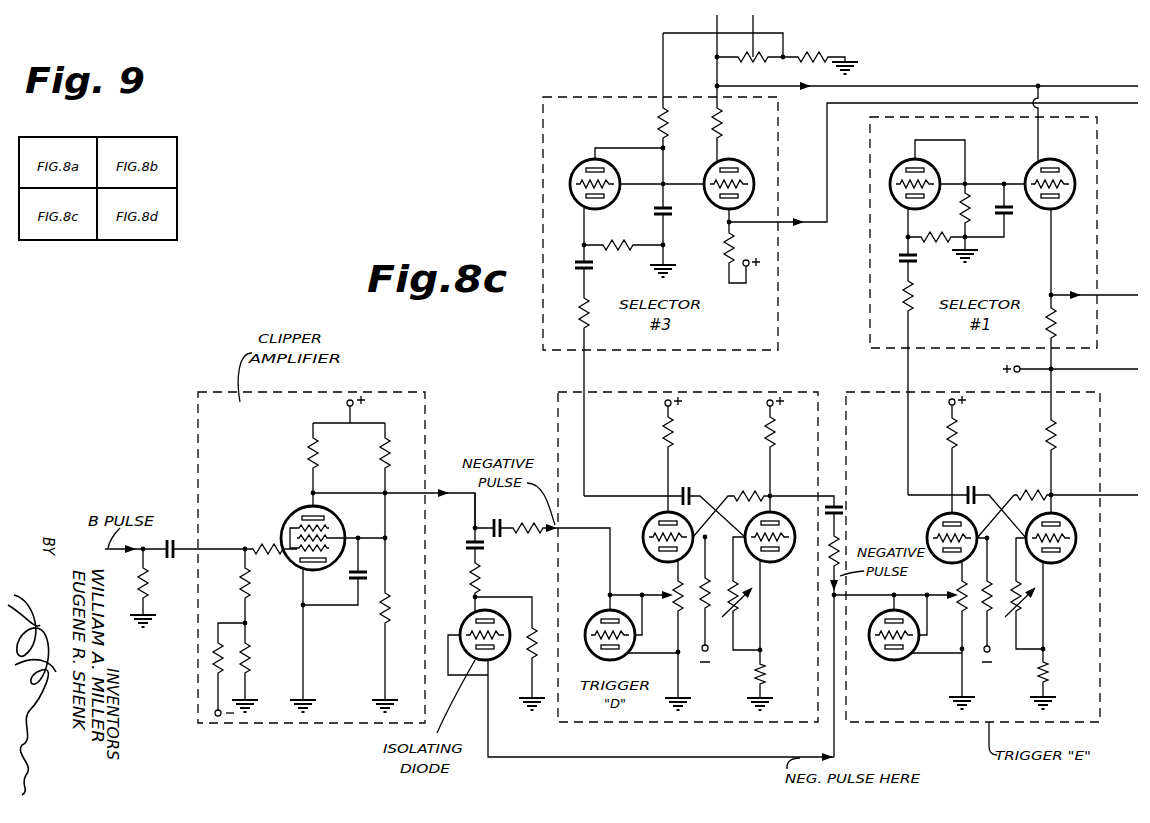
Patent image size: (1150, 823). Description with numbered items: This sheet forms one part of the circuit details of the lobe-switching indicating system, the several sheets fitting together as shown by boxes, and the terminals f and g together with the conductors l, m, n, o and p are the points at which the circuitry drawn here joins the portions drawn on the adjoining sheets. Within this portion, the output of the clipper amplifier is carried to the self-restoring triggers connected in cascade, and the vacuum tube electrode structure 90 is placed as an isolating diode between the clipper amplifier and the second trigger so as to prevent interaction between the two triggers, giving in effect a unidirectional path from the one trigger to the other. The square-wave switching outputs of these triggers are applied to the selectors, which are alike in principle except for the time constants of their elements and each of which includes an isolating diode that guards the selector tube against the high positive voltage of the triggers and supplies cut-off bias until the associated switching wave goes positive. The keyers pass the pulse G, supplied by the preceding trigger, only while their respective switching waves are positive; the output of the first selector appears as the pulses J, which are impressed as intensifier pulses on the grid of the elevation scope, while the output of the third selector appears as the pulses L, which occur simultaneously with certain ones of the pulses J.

The vacuum tube electrode structure 90 is at (469, 615).
The terminal f is at (709, 22).
The terminal g is at (758, 22).
The pulse G is at (926, 79).
The pulses L is at (932, 164).
The conductor l is at (1122, 74).
The conductor m is at (1112, 106).
The conductor n is at (1126, 284).
The conductor o is at (1128, 356).
The conductor p is at (1118, 500).
The pulses J is at (1094, 286).